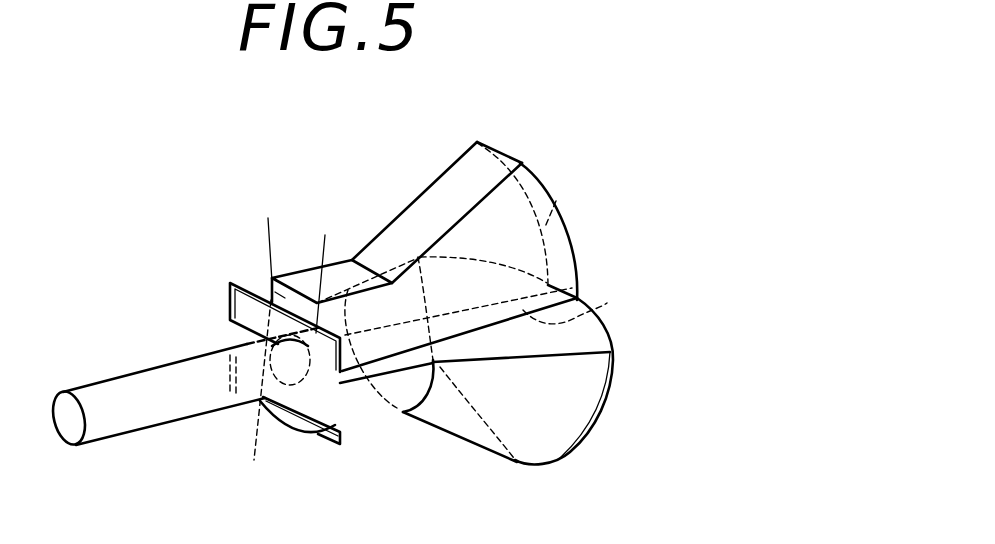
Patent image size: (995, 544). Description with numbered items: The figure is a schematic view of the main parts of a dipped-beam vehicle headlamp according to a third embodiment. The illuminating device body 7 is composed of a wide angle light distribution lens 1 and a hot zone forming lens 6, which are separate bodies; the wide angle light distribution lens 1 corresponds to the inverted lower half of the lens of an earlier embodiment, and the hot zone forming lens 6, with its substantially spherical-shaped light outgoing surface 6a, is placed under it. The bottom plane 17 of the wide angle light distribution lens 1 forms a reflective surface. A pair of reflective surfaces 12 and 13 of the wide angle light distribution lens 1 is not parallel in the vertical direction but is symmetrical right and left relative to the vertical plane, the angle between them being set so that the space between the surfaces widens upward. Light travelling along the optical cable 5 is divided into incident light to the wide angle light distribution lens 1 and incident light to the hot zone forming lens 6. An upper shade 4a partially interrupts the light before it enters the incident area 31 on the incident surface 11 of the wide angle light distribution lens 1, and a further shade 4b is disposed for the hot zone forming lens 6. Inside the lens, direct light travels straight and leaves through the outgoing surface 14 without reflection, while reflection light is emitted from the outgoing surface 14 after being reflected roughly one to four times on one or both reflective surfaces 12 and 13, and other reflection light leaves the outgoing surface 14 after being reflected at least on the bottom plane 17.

The wide angle light distribution lens 1 is at (399, 182).
The optical cable 5 is at (122, 376).
The hot zone forming lens 6 is at (525, 432).
The light outgoing surface 6a is at (614, 358).
The illuminating device body 7 is at (507, 142).
The incident surface 11 is at (272, 290).
The reflective surface 12 is at (493, 217).
The reflective surface 13 is at (462, 235).
The outgoing surface 14 is at (557, 200).
The bottom plane 17 is at (594, 300).
The incident area 31 is at (270, 412).
The shade 4a is at (230, 303).
The shade 4b is at (336, 442).